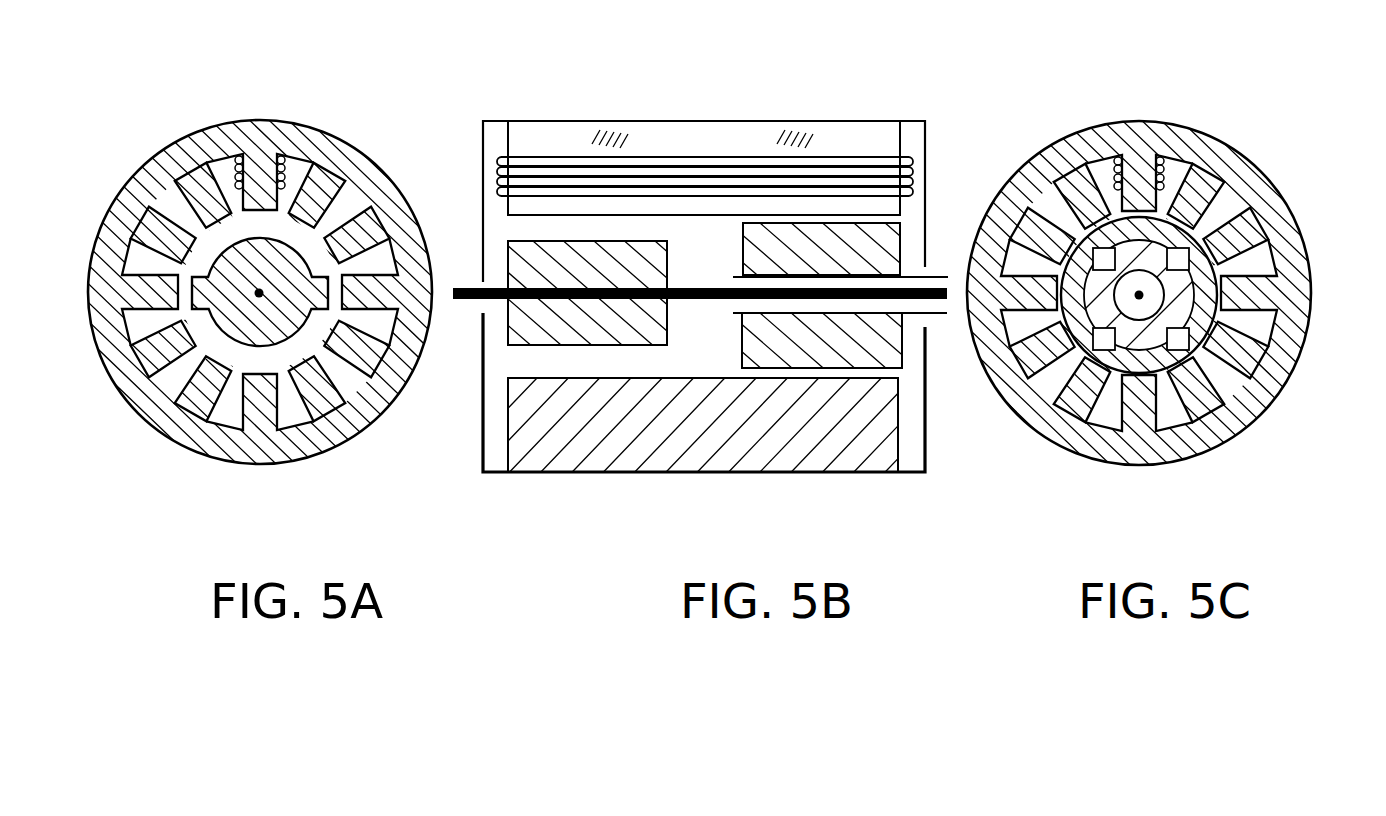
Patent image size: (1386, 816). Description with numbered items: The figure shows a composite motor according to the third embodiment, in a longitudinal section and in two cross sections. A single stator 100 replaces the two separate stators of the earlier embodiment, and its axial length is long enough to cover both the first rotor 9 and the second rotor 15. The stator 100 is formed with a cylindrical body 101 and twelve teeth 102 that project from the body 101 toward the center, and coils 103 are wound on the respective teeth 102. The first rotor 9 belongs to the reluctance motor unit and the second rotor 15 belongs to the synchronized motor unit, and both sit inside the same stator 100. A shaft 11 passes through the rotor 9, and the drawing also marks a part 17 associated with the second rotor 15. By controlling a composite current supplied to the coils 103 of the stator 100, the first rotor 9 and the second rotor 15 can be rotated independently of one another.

In FIG. 5A, the first rotor 9 is at (190, 291).
In FIG. 5B, the first rotor 9 is at (515, 262).
In FIG. 5A, the shaft 11 is at (259, 298).
In FIG. 5B, the shaft 11 is at (497, 303).
In FIG. 5B, the second rotor 15 is at (885, 238).
In FIG. 5C, the second rotor 15 is at (1201, 272).
In FIG. 5B, the rotary shaft 17 is at (940, 322).
In FIG. 5C, the rotary shaft 17 is at (1162, 298).
In FIG. 5A, the stator 100 is at (353, 299).
In FIG. 5B, the stator 100 is at (745, 140).
In FIG. 5C, the stator 100 is at (1040, 299).
In FIG. 5A, the cylindrical body 101 is at (193, 150).
In FIG. 5C, the cylindrical body 101 is at (1097, 152).
In FIG. 5A, the teeth 102 is at (262, 172).
In FIG. 5C, the teeth 102 is at (1138, 178).
In FIG. 5A, the coils 103 is at (290, 165).
In FIG. 5B, the coils 103 is at (838, 160).
In FIG. 5C, the coils 103 is at (1165, 170).